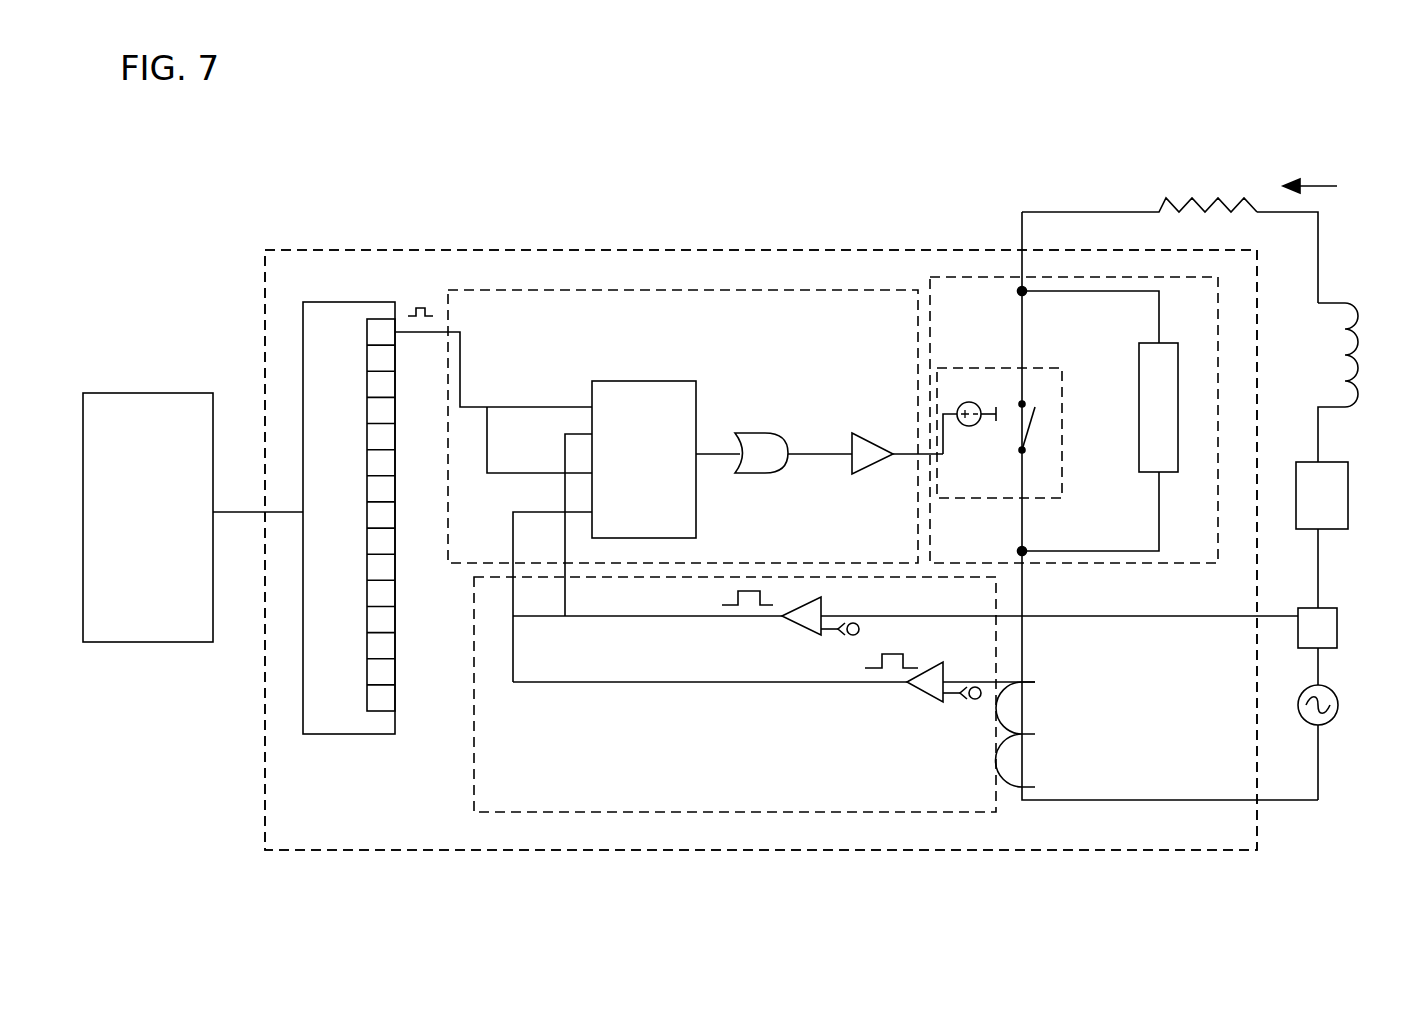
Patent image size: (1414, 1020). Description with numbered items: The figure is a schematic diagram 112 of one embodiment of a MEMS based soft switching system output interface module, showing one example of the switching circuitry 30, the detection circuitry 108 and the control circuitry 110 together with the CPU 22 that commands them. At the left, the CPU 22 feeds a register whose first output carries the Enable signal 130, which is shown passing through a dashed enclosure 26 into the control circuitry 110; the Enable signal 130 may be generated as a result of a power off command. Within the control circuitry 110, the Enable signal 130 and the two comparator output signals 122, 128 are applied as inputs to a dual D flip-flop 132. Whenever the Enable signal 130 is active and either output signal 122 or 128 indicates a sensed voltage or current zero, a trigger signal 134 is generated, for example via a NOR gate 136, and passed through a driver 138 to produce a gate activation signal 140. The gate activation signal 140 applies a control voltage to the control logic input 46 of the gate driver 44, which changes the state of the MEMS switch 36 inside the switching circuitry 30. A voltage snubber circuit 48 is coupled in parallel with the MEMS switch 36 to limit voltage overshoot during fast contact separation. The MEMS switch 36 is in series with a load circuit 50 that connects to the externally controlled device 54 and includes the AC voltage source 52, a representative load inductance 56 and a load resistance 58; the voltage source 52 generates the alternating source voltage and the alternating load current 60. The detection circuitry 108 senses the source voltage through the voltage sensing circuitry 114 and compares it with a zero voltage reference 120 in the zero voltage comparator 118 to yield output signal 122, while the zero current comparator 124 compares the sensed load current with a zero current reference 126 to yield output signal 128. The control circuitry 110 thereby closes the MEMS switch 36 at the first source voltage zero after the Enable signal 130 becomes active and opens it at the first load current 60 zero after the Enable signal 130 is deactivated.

The CPU 22 is at (128, 393).
The controller circuit 26 is at (265, 810).
The MEMS based switching circuitry 30 is at (985, 277).
The MEMS switch 36 is at (995, 368).
The gate driver 44 is at (986, 405).
The control logic input 46 is at (943, 440).
The voltage snubber circuit 48 is at (1139, 380).
The load circuit 50 is at (1278, 820).
The voltage source 52 is at (1340, 713).
The externally controlled device 54 is at (1348, 482).
The load inductance 56 is at (1332, 300).
The load resistance 58 is at (1244, 198).
The alternating load current 60 is at (1335, 148).
The detection circuitry 108 is at (474, 786).
The control circuitry 110 is at (793, 250).
The schematic diagram 112 is at (468, 178).
The voltage sensing circuitry 114 is at (1320, 608).
The zero voltage comparator 118 is at (802, 627).
The zero voltage reference 120 is at (853, 636).
The output signal 122 is at (722, 605).
The zero current comparator 124 is at (920, 692).
The zero current reference 126 is at (968, 700).
The output signal 128 is at (865, 668).
The Enable signal 130 is at (368, 282).
The dual D flip-flop 132 is at (598, 381).
The trigger signal 134 is at (805, 454).
The NOR gate 136 is at (766, 433).
The driver 138 is at (873, 470).
The gate activation signal 140 is at (918, 456).